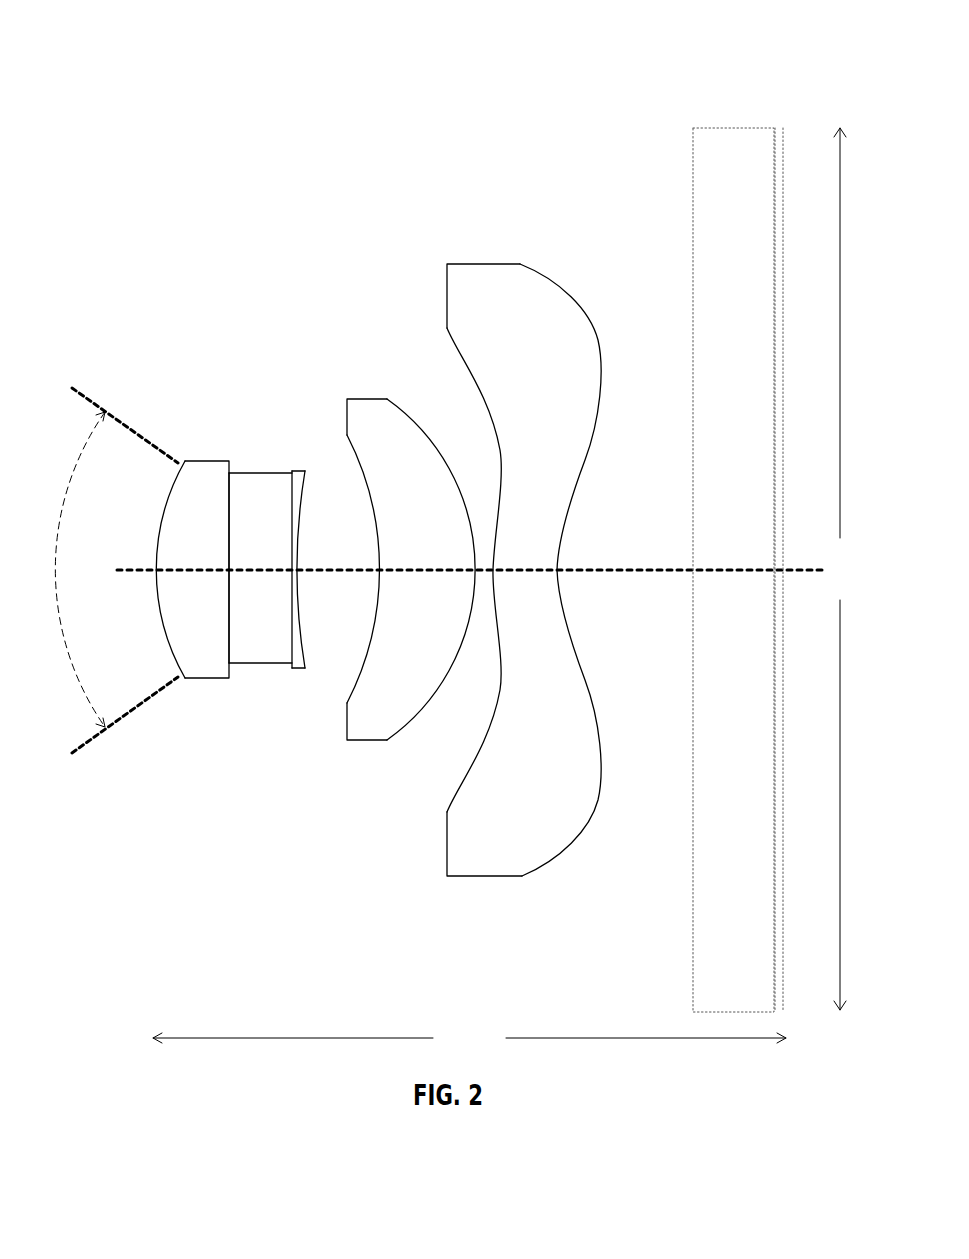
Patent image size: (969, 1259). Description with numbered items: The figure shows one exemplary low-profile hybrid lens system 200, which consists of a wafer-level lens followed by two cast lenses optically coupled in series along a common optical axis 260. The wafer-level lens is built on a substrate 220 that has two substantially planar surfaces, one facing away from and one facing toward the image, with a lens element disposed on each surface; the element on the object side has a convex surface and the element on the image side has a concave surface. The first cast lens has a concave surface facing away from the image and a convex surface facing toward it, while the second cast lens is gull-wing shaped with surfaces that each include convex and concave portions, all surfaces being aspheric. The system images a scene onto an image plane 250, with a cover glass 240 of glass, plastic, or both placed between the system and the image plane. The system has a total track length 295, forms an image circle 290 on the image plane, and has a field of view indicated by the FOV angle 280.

The low-profile hybrid lens system 200 is at (275, 95).
The substrate 220 is at (231, 560).
The cover glass 240 is at (735, 128).
The image plane 250 is at (783, 158).
The optical axis 260 is at (618, 572).
The FOV angle 280 is at (80, 453).
The image circle 290 is at (842, 569).
The total track length 295 is at (469, 1037).